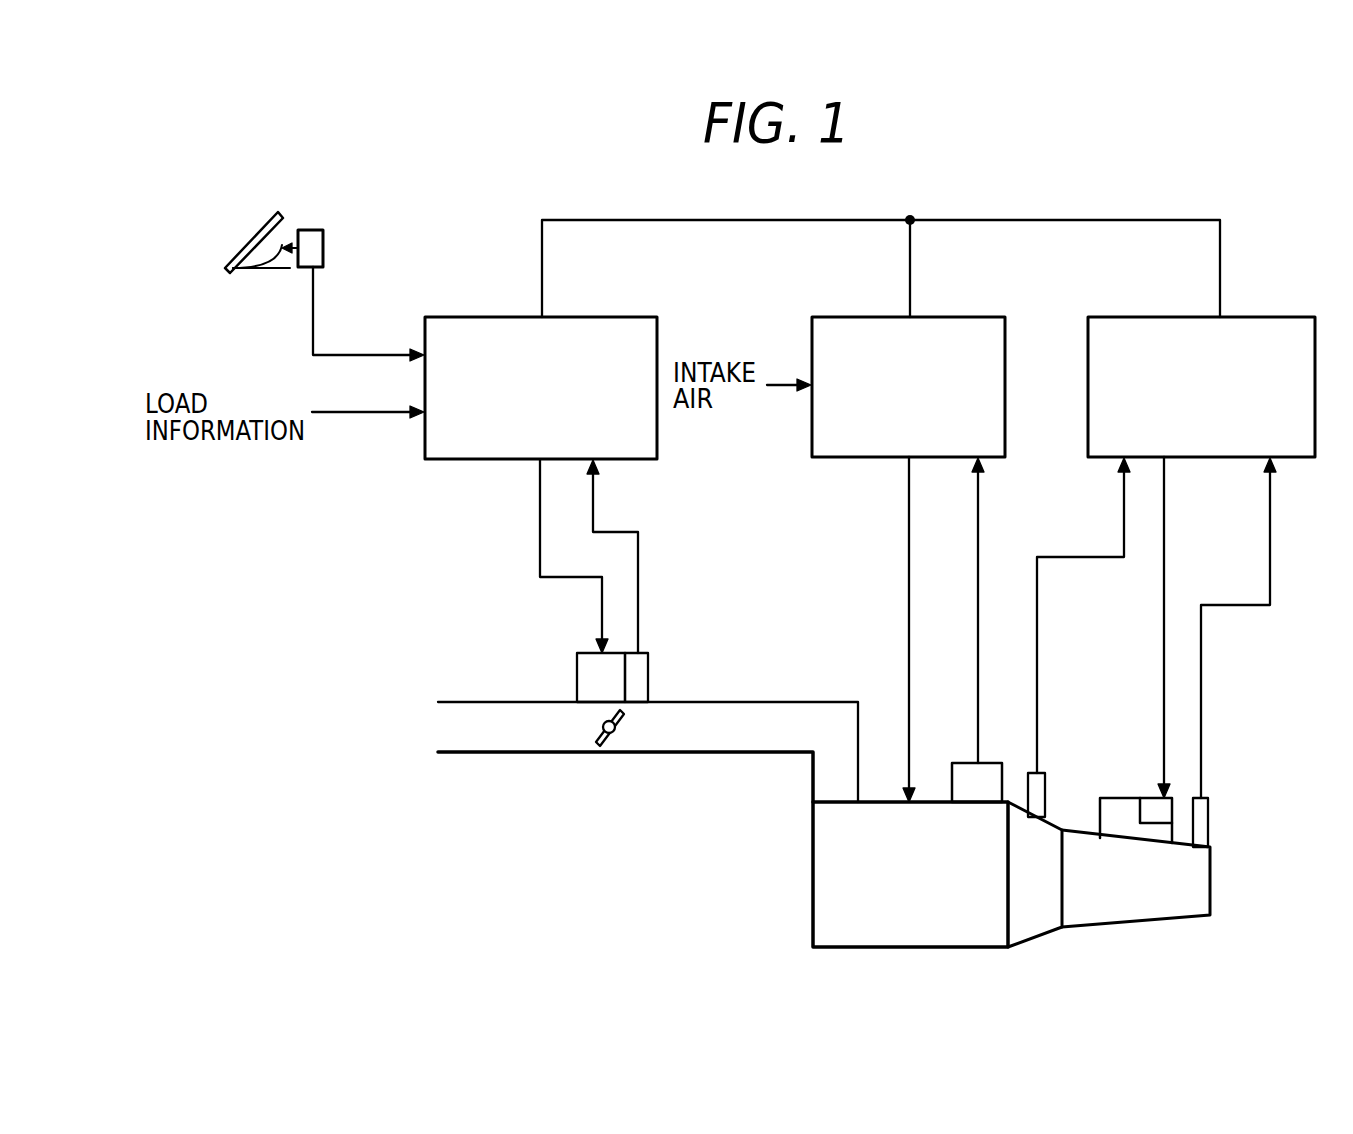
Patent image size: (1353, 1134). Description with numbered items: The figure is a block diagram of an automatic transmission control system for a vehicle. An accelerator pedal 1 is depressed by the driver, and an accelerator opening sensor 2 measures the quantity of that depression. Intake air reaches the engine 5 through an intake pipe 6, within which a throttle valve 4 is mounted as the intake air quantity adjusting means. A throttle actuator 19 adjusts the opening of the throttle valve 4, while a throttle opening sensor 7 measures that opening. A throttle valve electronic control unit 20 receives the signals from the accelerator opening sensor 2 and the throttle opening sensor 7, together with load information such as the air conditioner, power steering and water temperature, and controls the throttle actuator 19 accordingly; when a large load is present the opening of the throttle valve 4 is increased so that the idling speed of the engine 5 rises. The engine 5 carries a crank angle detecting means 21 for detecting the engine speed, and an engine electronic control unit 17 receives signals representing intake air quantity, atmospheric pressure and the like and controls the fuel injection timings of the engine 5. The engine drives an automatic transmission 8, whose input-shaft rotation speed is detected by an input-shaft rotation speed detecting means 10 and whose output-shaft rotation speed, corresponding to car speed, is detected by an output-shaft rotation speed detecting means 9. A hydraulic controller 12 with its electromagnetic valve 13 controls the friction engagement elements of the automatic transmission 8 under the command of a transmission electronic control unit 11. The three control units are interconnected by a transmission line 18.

The accelerator pedal 1 is at (262, 230).
The accelerator opening sensor 2 is at (323, 240).
The throttle valve 4 is at (604, 738).
The engine 5 is at (812, 858).
The intake pipe 6 is at (718, 735).
The throttle opening sensor 7 is at (648, 670).
The automatic transmission 8 is at (1211, 862).
The output-shaft rotation speed detecting means 9 is at (1208, 816).
The input-shaft rotation speed detecting means 10 is at (1045, 790).
The transmission electronic control unit 11 is at (1117, 316).
The hydraulic controller 12 is at (1110, 798).
The electromagnetic valve 13 is at (1150, 798).
The engine electronic control unit 17 is at (836, 460).
The transmission line 18 is at (955, 219).
The throttle actuator 19 is at (577, 678).
The throttle valve electronic control unit 20 is at (448, 462).
The crank angle detecting means 21 is at (960, 763).